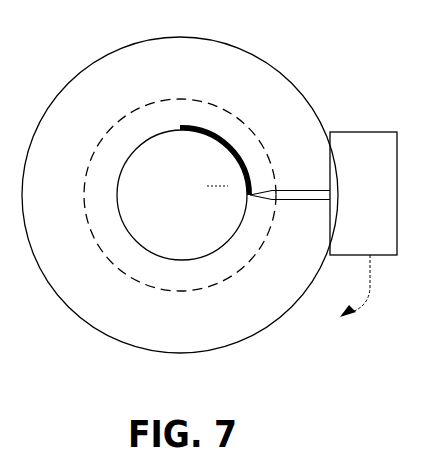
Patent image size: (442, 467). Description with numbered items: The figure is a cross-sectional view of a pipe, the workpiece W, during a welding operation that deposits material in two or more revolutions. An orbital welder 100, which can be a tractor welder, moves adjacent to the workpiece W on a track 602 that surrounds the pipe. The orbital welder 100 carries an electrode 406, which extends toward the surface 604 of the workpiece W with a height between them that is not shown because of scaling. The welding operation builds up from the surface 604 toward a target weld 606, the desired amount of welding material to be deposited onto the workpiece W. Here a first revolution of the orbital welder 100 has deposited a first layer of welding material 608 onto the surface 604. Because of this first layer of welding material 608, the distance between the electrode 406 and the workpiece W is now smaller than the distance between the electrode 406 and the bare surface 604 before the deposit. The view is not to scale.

The orbital welder 100 is at (382, 132).
The electrode 406 is at (291, 190).
The track 602 is at (218, 42).
The surface 604 is at (117, 194).
The target weld 606 is at (89, 160).
The first layer of welding material 608 is at (231, 120).
The workpiece W is at (217, 175).